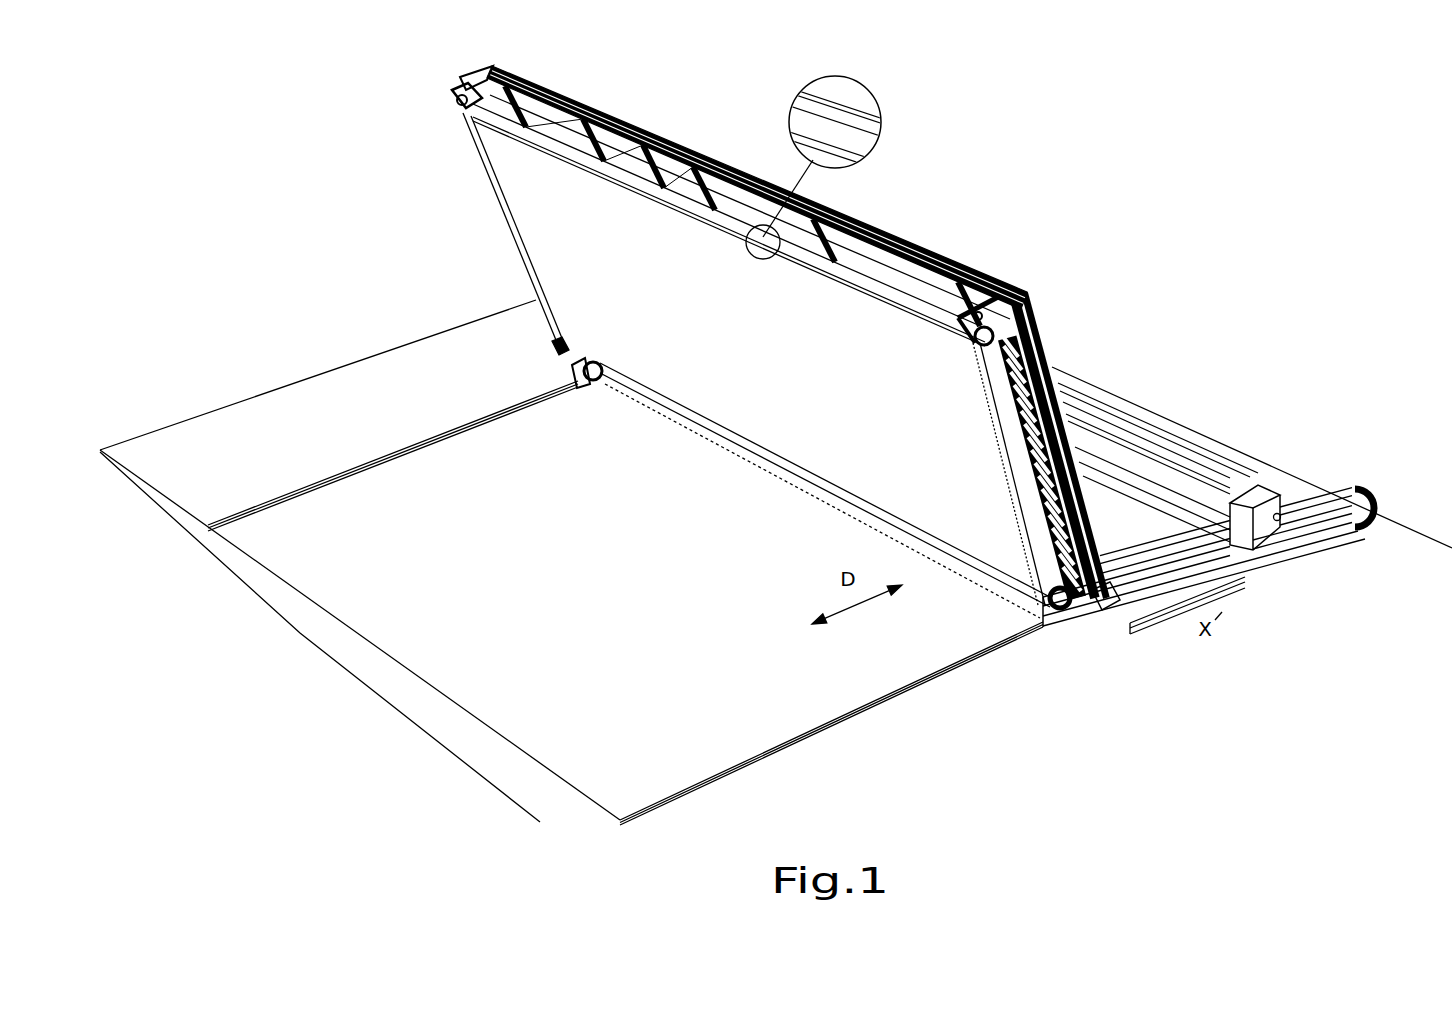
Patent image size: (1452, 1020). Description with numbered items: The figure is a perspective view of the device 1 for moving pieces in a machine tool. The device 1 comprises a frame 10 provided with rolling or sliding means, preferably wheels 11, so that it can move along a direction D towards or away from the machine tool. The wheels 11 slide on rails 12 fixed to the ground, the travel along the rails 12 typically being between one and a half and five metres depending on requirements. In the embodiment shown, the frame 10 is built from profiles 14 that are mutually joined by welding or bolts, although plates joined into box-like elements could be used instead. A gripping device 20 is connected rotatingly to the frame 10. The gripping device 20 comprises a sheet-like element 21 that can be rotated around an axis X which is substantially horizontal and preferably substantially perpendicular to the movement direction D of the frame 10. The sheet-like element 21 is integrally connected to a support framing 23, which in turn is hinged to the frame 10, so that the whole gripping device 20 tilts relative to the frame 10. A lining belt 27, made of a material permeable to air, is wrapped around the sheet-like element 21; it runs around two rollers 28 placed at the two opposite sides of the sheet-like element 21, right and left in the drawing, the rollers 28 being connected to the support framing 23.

The device for moving pieces 1 is at (315, 159).
The frame 10 is at (1251, 417).
The wheels 11 is at (598, 386).
The rails 12 is at (457, 433).
The profiles 14 is at (1122, 425).
The gripping device 20 is at (944, 192).
The sheet-like element 21 is at (873, 127).
The support framing 23 is at (710, 150).
The lining belt 27 is at (508, 199).
The rollers 28 is at (458, 92).